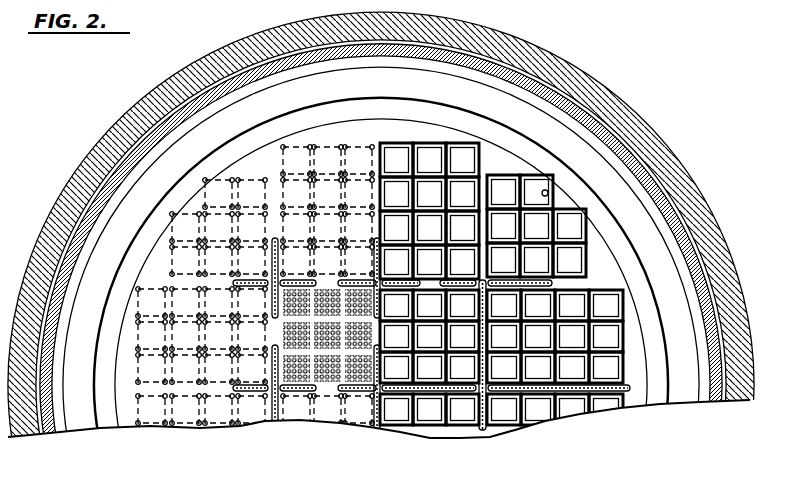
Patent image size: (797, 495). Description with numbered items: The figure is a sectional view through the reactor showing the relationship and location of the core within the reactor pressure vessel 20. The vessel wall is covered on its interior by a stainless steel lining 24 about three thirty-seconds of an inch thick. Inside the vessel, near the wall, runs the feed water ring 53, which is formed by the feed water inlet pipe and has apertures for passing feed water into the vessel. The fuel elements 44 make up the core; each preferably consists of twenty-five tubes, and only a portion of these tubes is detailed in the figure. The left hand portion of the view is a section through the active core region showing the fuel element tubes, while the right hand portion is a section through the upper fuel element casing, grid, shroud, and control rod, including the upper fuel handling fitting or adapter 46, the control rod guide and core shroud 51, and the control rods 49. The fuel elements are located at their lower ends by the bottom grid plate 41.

The reactor pressure vessel 20 is at (645, 128).
The lining 24 is at (612, 130).
The bottom grid plate 41 is at (618, 262).
The fuel elements 44 is at (332, 140).
The upper fuel handling fitting or adapter 46 is at (549, 193).
The control rods 49 is at (528, 380).
The control rod guide and core shroud 51 is at (464, 142).
The feed water ring 53 is at (535, 127).